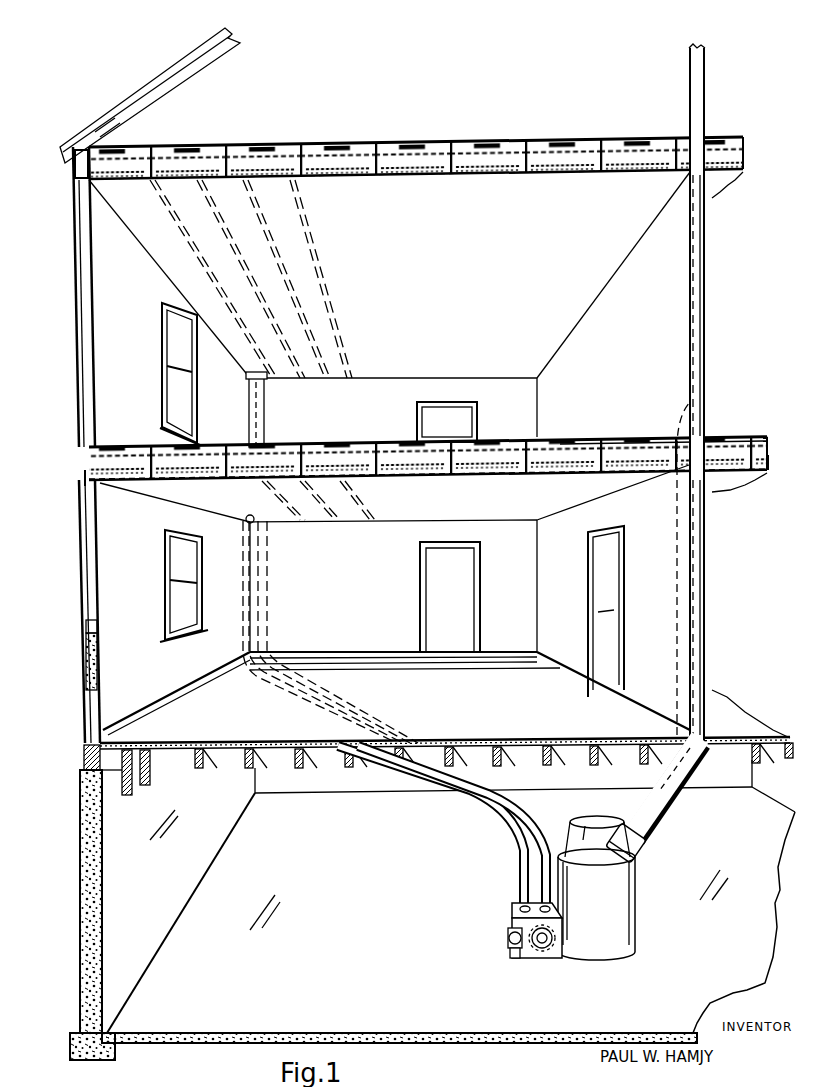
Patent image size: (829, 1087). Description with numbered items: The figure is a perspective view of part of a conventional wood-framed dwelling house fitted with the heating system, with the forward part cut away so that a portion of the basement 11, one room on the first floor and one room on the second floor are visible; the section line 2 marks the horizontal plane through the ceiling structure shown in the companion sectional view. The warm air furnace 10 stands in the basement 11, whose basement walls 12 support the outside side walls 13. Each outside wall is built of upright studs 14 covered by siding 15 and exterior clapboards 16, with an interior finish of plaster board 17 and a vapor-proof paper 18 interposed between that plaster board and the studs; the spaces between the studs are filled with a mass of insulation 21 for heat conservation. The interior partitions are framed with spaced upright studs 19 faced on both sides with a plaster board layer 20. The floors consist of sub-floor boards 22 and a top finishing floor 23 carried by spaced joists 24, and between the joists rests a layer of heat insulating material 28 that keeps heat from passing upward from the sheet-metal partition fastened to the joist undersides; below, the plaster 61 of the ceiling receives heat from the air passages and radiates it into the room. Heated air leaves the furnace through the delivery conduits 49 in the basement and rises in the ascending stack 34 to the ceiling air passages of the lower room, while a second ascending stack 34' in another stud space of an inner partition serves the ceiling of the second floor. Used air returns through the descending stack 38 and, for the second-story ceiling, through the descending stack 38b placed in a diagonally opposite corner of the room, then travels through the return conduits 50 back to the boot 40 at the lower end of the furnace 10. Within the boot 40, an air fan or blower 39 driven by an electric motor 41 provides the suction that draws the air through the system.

The section line 2 is at (86, 477).
The warm air furnace 10 is at (596, 888).
The basement 11 is at (448, 901).
The basement walls 12 is at (98, 897).
The outside side walls 13 is at (86, 640).
The upright studs 14 is at (87, 700).
The siding 15 is at (77, 380).
The exterior clapboards 16 is at (76, 297).
The plaster board 17 is at (100, 668).
The vapor-proof paper 18 is at (93, 578).
The upright studs 19 is at (705, 117).
The plaster board layer 20 is at (725, 402).
The insulation 21 is at (86, 650).
The sub-floor boards 22 is at (378, 165).
The finishing floor 23 is at (360, 445).
The joists 24 is at (503, 445).
The heat insulating material 28 is at (622, 438).
The ascending stack 34 is at (713, 572).
The ascending stack 34' is at (721, 287).
The descending stack 38 is at (247, 620).
The descending stack 38b is at (266, 397).
The air fan or blower 39 is at (540, 962).
The boot 40 is at (556, 958).
The electric motor 41 is at (508, 940).
The delivery conduits 49 is at (665, 808).
The return conduits 50 is at (432, 800).
The plaster 61 is at (450, 168).